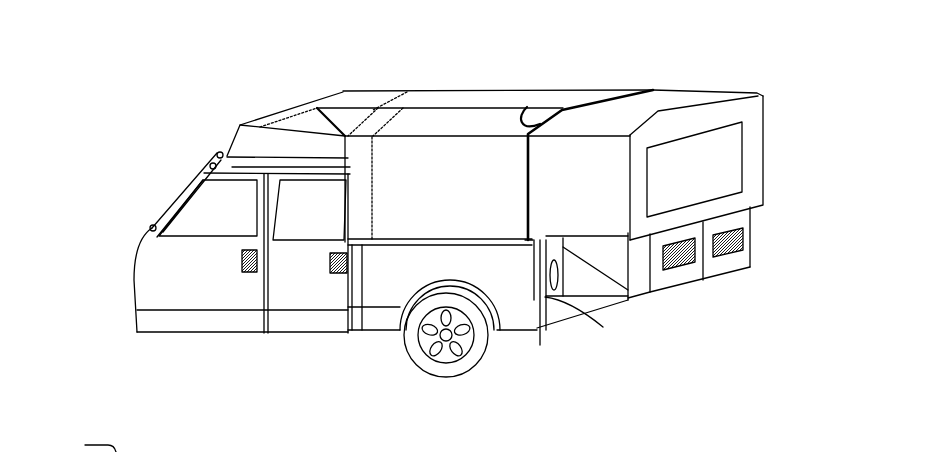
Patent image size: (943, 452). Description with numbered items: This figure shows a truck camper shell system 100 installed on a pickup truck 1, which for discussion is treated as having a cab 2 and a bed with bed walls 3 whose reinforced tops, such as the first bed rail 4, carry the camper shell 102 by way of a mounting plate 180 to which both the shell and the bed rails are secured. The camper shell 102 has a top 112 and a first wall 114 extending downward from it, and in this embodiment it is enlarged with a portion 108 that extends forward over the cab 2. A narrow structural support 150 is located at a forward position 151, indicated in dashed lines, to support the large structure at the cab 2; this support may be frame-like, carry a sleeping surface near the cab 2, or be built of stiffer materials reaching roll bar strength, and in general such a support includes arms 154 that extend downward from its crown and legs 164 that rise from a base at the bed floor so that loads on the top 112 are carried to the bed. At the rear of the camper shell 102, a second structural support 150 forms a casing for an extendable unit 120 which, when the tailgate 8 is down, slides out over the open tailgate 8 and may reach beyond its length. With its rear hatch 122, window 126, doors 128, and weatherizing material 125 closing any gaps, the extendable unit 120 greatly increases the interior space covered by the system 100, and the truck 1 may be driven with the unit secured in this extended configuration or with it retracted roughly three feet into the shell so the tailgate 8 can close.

The truck camper shell system 100 is at (148, 56).
The pickup truck 1 is at (167, 203).
The cab 2 is at (347, 270).
The bed walls 3 is at (370, 320).
The first bed rail 4 is at (398, 247).
The tailgate 8 is at (688, 288).
The truck camper shell 102 is at (343, 92).
The portion 108 is at (282, 123).
The top 112 is at (492, 100).
The first wall 114 is at (440, 160).
The extendable unit 120 is at (712, 90).
The rear hatch 122 is at (753, 135).
The weatherizing material 125 is at (602, 100).
The window 126 is at (737, 175).
The doors 128 is at (687, 275).
The structural support 150 is at (675, 92).
The forward position 151 is at (407, 93).
The arms 154 is at (585, 200).
The legs 164 is at (638, 273).
The mounting plate 180 is at (497, 245).